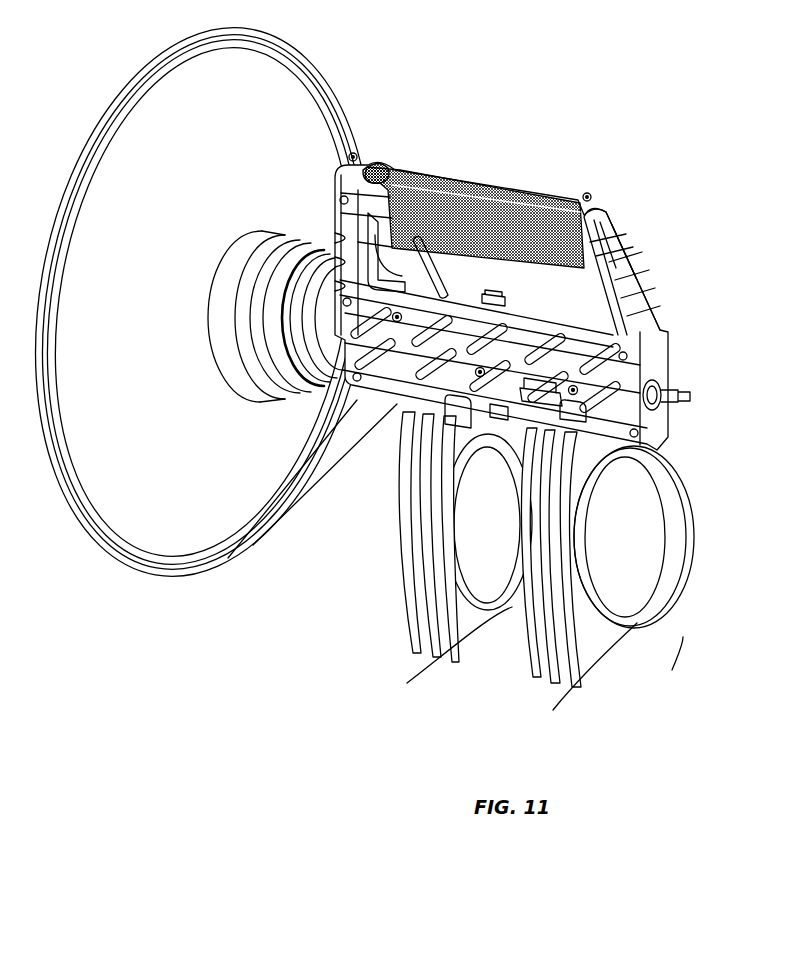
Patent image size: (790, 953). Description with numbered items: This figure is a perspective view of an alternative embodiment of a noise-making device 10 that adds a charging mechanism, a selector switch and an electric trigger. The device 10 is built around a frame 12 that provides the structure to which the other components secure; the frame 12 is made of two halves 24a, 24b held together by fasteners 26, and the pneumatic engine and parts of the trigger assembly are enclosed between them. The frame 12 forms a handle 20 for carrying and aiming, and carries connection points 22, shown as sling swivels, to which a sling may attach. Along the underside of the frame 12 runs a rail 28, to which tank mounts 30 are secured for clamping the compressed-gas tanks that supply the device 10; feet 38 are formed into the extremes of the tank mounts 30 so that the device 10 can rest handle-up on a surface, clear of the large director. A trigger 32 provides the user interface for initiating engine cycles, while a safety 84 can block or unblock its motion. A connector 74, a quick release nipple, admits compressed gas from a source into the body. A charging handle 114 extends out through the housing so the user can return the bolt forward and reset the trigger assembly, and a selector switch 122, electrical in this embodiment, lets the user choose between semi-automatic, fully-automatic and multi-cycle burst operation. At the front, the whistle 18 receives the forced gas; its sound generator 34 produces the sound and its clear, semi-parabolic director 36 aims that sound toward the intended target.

The noise-making device 10 is at (535, 82).
The frame 12 is at (627, 210).
The whistle 18 is at (257, 566).
The handle 20 is at (378, 190).
The connection points 22 is at (358, 152).
The frame half 24a is at (648, 305).
The frame half 24b is at (625, 288).
The fasteners 26 is at (562, 405).
The rail 28 is at (427, 410).
The tank mounts 30 is at (480, 620).
The trigger 32 is at (427, 185).
The sound generator 34 is at (222, 268).
The director 36 is at (178, 102).
The feet 38 is at (438, 660).
The connector 74 is at (676, 396).
The safety 84 is at (398, 321).
The charging handle 114 is at (542, 386).
The selector switch 122 is at (486, 292).